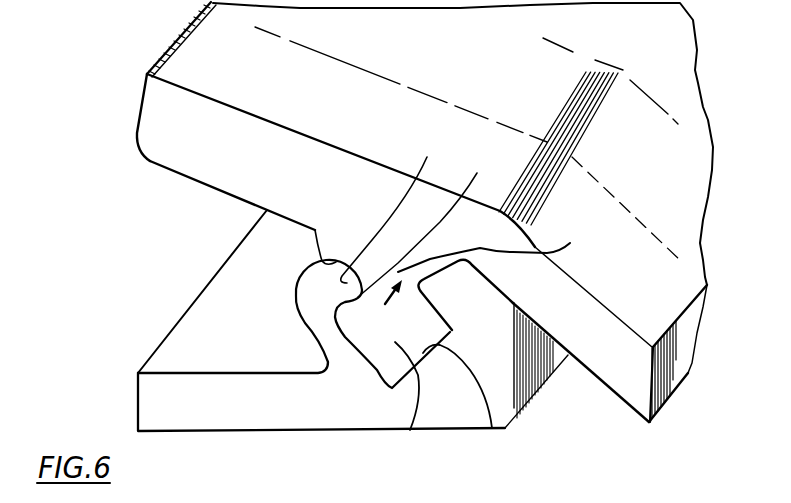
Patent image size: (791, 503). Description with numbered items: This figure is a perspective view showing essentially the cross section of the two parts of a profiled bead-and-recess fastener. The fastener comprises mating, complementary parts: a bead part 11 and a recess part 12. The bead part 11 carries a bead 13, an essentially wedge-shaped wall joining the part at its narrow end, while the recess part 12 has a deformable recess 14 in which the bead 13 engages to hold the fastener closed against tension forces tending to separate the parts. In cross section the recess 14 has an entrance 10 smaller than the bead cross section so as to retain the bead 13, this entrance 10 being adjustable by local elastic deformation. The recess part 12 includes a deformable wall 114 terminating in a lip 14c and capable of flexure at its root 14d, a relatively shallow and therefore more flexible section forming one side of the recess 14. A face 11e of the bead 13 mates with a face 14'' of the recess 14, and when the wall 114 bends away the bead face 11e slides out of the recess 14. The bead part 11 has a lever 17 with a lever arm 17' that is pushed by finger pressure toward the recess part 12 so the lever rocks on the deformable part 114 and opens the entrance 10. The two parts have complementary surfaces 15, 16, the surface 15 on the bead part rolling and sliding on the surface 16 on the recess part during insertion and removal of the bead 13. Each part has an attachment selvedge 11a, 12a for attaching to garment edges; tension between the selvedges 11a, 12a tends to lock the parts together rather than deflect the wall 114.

The entrance 10 is at (525, 322).
The bead part 11 is at (192, 50).
The attachment selvedge 11a is at (640, 387).
The bead face 11e is at (480, 318).
The recess part 12 is at (193, 412).
The attachment selvedge 12a is at (160, 395).
The bead 13 is at (409, 431).
The recess 14 is at (373, 391).
The recess face 14'' is at (499, 411).
The lip 14c is at (468, 162).
The root 14d is at (340, 362).
The complementary surface 15 is at (370, 208).
The complementary surface 16 is at (313, 234).
The lever 17 is at (275, 160).
The lever arm 17' is at (111, 127).
The deformable wall 114 is at (312, 279).